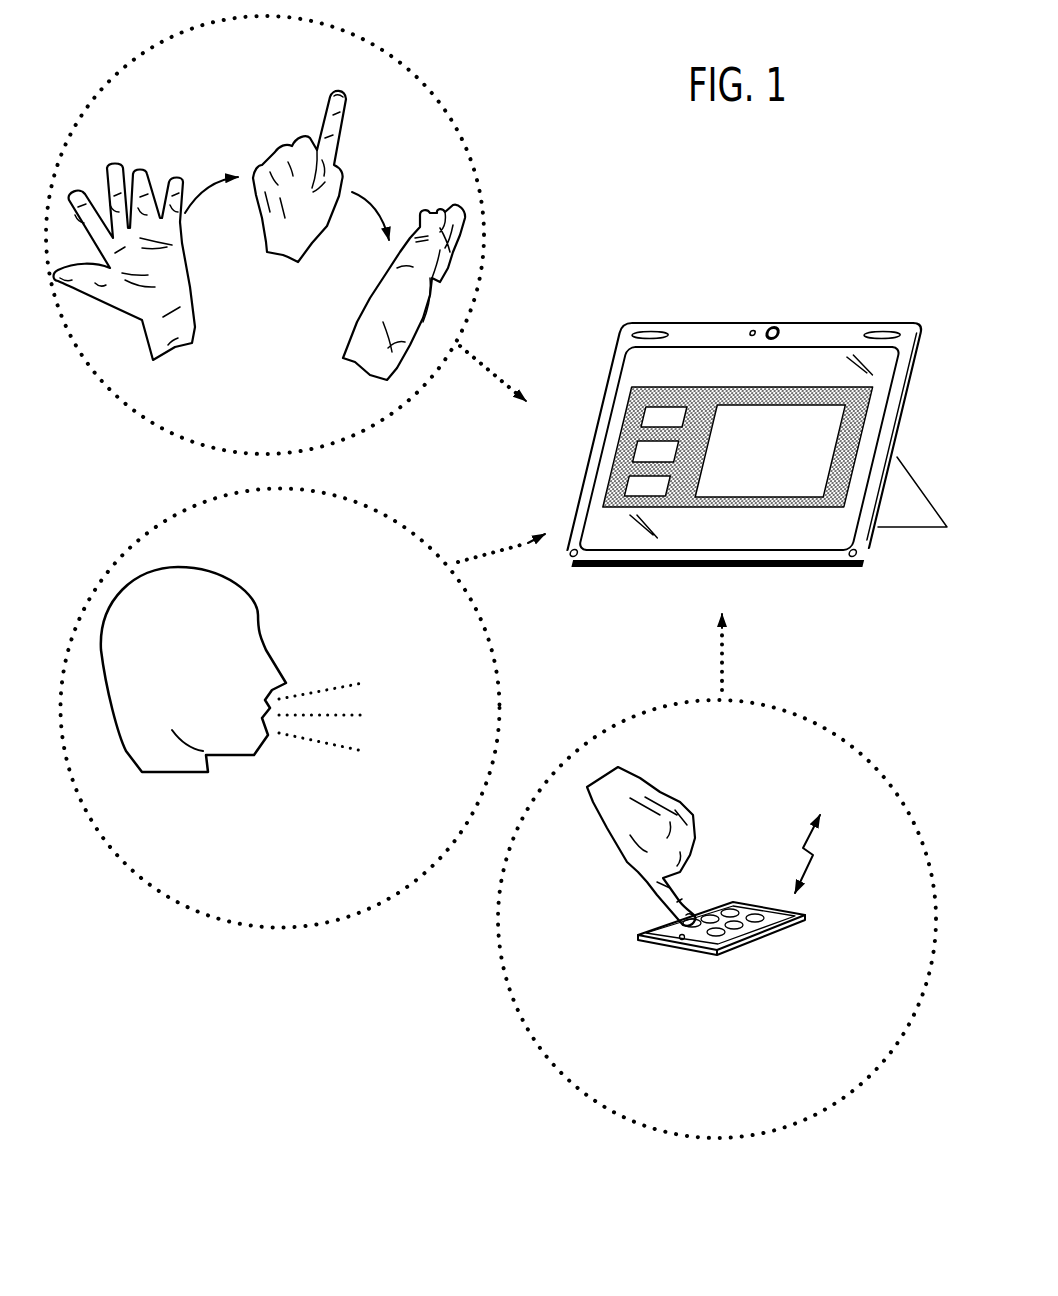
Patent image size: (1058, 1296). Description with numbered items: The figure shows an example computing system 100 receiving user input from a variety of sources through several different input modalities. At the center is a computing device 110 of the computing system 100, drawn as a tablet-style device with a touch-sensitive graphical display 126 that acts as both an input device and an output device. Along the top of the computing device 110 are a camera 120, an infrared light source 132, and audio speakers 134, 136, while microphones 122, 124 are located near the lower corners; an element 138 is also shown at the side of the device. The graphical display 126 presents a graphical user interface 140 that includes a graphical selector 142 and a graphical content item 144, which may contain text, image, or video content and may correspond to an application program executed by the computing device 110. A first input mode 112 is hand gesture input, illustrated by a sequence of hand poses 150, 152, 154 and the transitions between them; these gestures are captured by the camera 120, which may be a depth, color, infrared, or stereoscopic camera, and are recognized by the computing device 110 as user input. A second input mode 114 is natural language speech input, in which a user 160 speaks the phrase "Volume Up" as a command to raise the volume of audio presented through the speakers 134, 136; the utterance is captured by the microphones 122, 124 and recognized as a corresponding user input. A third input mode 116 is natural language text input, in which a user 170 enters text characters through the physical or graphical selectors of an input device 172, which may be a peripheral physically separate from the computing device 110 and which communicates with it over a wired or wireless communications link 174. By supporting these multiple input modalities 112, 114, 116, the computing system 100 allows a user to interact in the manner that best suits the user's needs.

The computing system 100 is at (847, 198).
The computing device 110 is at (848, 330).
The input mode 112 is at (420, 108).
The input mode 114 is at (394, 546).
The input mode 116 is at (821, 752).
The camera 120 is at (771, 327).
The microphone 122 is at (575, 558).
The microphone 124 is at (853, 558).
The touch-sensitive graphical display 126 is at (803, 541).
The infrared light source 132 is at (752, 328).
The audio speaker 134 is at (660, 332).
The audio speaker 136 is at (891, 332).
The stand 138 is at (870, 542).
The graphical user interface 140 is at (622, 457).
The graphical selector 142 is at (647, 410).
The graphical content item 144 is at (827, 428).
The hand pose 150 is at (168, 346).
The hand pose 152 is at (283, 255).
The hand pose 154 is at (352, 362).
The user 160 is at (171, 765).
The user 170 is at (605, 823).
The input device 172 is at (716, 950).
The wired or wireless communications link 174 is at (827, 854).